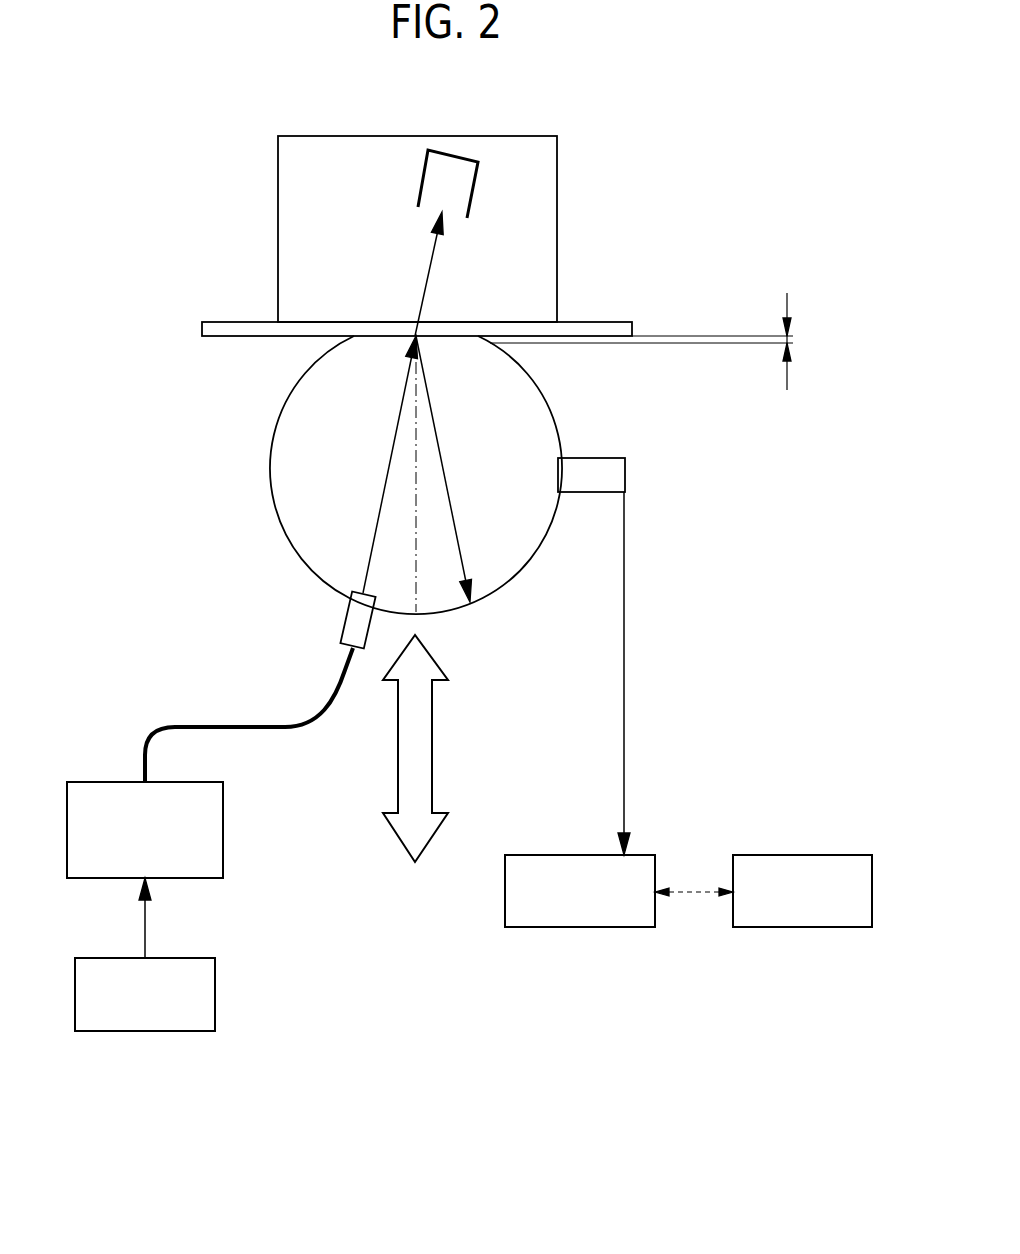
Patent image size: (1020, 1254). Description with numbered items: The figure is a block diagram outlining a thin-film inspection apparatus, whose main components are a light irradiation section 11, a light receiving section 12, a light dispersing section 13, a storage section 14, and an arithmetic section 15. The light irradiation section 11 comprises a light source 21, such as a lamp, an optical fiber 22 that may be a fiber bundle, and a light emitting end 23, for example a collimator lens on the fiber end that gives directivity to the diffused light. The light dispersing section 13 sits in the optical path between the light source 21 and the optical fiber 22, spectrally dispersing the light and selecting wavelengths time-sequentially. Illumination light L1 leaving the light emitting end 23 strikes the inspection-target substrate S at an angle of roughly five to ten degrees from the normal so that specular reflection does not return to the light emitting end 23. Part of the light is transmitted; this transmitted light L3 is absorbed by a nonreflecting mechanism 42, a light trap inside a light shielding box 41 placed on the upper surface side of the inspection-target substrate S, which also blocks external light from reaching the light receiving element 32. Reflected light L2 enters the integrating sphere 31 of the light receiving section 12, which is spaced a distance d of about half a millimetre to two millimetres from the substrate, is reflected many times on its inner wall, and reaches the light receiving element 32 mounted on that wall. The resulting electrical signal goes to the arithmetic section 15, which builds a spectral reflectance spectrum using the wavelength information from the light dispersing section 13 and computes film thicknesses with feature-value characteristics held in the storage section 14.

The light irradiation section 11 is at (148, 670).
The light receiving section 12 is at (165, 355).
The light dispersing section 13 is at (223, 815).
The storage section 14 is at (800, 853).
The arithmetic section 15 is at (550, 853).
The light source 21 is at (215, 985).
The optical fiber 22 is at (283, 725).
The light emitting end 23 is at (345, 617).
The integrating sphere 31 is at (270, 468).
The light receiving element 32 is at (615, 472).
The light shielding box 41 is at (557, 228).
The nonreflecting mechanism 42 is at (425, 182).
The inspection-target substrate S is at (235, 320).
The distance d is at (656, 341).
The illumination light L1 is at (385, 490).
The reflected light L2 is at (447, 477).
The transmitted light L3 is at (430, 278).